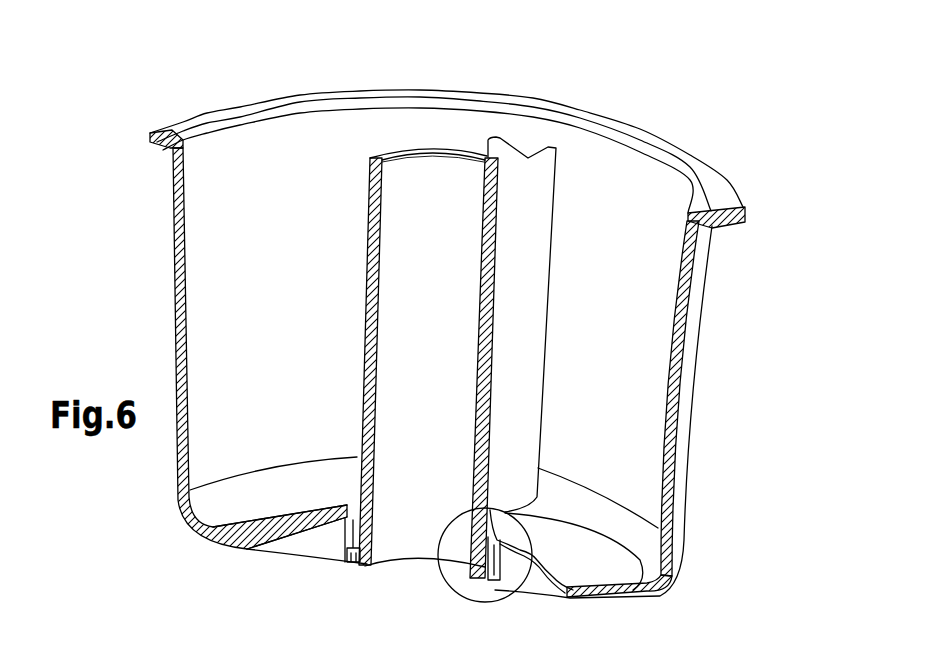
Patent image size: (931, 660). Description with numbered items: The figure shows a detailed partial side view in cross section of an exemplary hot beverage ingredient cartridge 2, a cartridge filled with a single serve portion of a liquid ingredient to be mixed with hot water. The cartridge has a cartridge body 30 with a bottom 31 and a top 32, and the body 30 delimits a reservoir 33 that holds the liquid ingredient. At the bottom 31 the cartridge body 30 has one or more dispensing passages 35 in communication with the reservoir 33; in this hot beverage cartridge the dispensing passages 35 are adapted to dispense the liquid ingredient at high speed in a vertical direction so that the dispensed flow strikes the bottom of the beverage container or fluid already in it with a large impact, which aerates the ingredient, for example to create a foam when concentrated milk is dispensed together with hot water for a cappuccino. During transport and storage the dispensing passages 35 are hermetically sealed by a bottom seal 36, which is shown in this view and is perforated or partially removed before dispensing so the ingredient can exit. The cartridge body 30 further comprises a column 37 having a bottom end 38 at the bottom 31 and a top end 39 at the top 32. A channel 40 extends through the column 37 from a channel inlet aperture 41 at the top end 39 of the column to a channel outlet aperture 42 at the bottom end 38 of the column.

The hot beverage ingredient cartridge 2 is at (728, 93).
The cartridge body 30 is at (690, 380).
The bottom 31 is at (698, 575).
The top 32 is at (713, 130).
The reservoir 33 is at (615, 188).
The dispensing passages 35 is at (352, 568).
The bottom seal 36 is at (322, 547).
The column 37 is at (378, 157).
The bottom end 38 is at (322, 492).
The top end 39 is at (462, 140).
The channel 40 is at (442, 368).
The channel inlet aperture 41 is at (427, 172).
The channel outlet aperture 42 is at (415, 570).